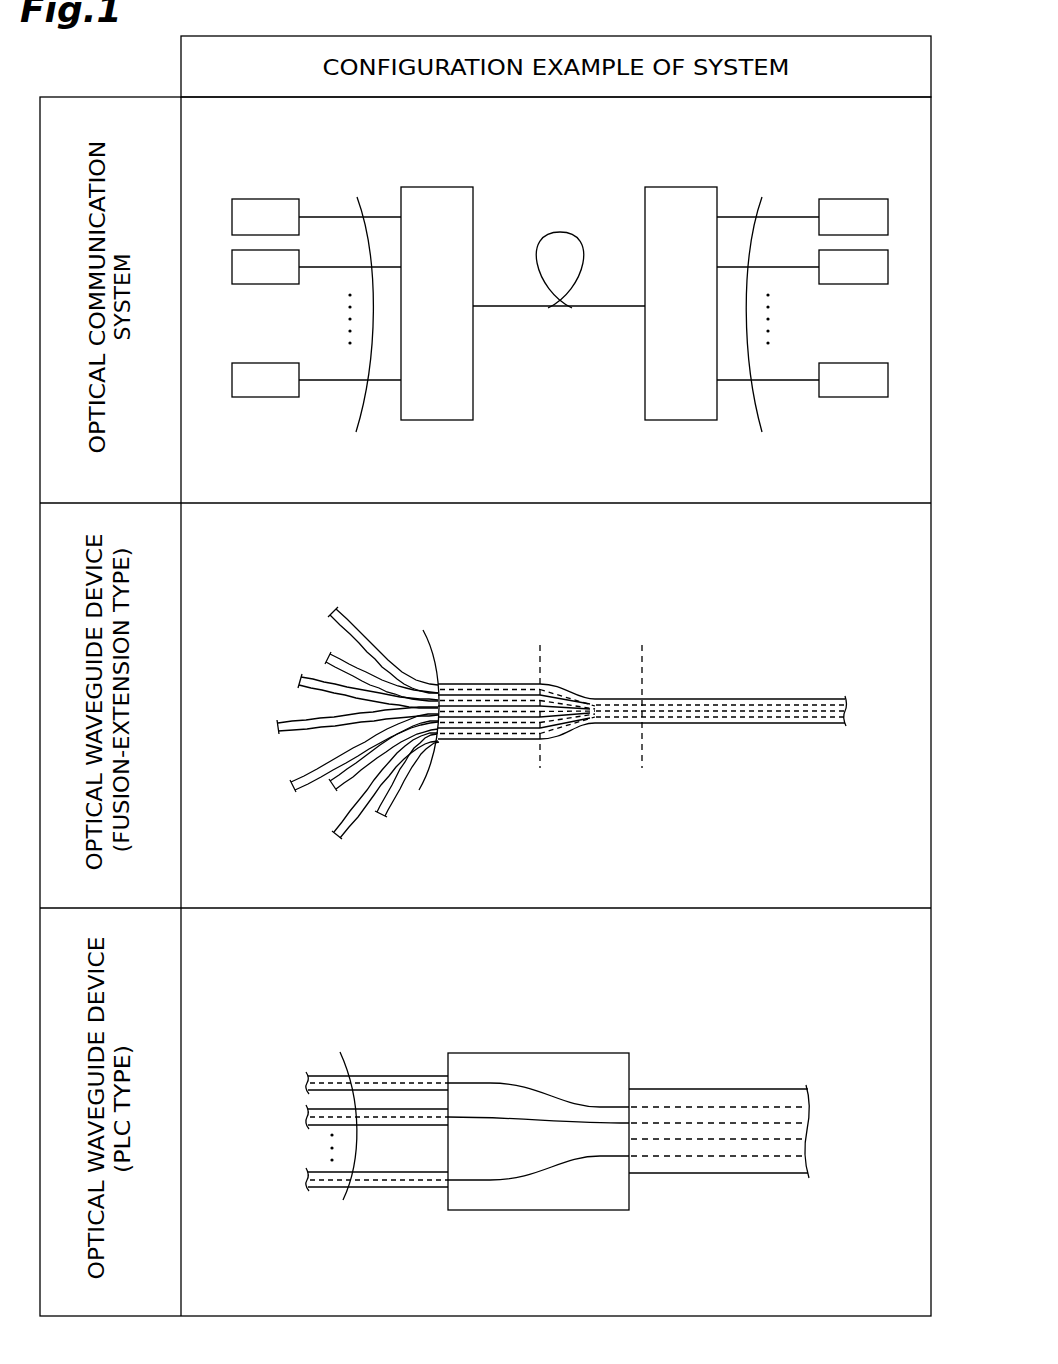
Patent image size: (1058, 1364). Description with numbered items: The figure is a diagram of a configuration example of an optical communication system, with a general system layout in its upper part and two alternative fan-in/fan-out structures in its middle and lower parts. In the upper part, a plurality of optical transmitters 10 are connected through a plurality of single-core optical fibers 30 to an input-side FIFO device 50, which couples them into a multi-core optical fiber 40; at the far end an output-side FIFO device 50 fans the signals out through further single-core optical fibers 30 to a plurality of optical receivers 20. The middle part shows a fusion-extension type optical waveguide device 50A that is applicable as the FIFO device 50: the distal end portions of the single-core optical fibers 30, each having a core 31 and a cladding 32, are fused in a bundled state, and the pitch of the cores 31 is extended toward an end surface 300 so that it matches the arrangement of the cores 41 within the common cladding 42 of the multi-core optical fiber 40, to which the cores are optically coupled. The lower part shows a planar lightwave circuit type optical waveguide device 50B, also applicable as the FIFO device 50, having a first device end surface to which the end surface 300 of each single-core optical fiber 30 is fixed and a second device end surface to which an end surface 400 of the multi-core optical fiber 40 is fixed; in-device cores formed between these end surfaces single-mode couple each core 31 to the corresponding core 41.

The optical transmitter (TX) 10 is at (279, 199).
The optical receiver (RX) 20 is at (870, 199).
The single-core optical fiber (SCF) 30 is at (351, 390).
The core 31 is at (498, 740).
The cladding 32 is at (458, 745).
The multi-core optical fiber (MCF) 40 is at (526, 307).
The core 41 is at (751, 700).
The common cladding 42 is at (809, 699).
The FIFO device 50 is at (446, 187).
The fusion-extension type optical waveguide device 50A is at (593, 639).
The planar lightwave circuit (PLC) type optical waveguide device 50B is at (560, 1053).
The end surface 300 is at (643, 697).
The end surface 400 is at (632, 1079).